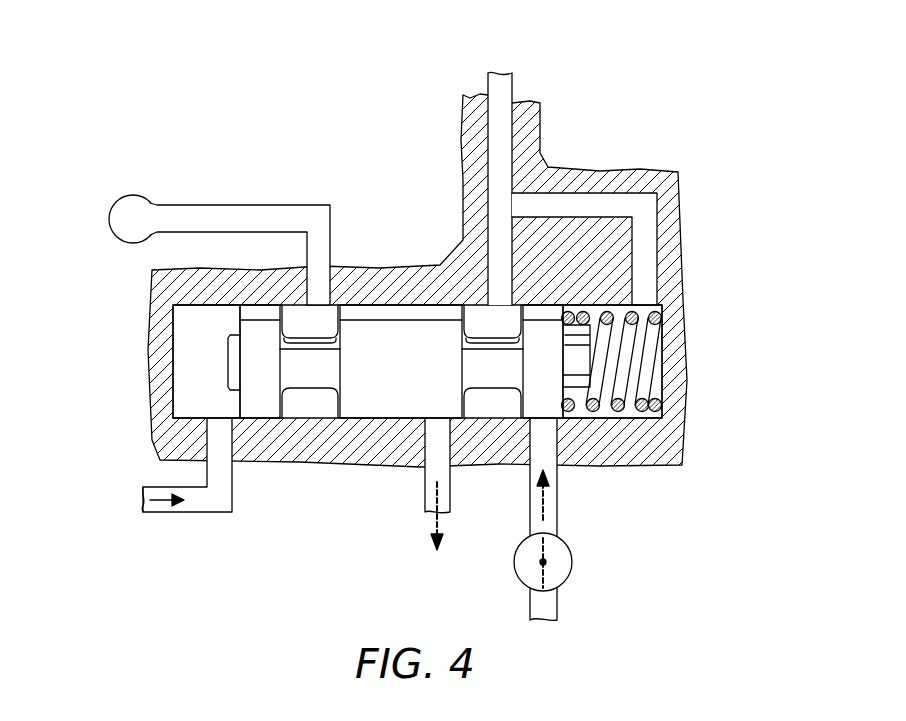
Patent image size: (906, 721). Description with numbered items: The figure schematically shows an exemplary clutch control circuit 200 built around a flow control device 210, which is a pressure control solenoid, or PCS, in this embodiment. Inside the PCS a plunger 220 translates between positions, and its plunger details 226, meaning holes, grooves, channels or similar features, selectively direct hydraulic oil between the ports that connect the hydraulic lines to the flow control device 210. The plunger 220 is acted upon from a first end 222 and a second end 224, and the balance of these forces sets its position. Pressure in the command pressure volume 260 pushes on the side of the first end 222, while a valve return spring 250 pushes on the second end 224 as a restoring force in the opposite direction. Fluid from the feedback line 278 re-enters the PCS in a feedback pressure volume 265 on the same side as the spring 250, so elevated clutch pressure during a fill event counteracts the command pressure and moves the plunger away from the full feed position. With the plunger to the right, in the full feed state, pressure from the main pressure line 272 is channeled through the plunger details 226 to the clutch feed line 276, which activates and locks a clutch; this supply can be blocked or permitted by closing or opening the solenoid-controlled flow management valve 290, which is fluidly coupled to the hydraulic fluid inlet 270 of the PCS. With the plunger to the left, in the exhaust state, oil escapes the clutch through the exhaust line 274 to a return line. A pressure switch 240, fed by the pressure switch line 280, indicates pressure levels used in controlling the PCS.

The valve assembly 200 is at (141, 96).
The flow control device 210 is at (407, 304).
The plunger 220 is at (377, 332).
The first end of the plunger 222 is at (232, 357).
The second end of the plunger 224 is at (580, 398).
The plunger details 226 is at (300, 335).
The pressure switch 240 is at (131, 195).
The valve return spring 250 is at (637, 357).
The command pressure volume 260 is at (183, 373).
The feedback pressure volume 265 is at (628, 385).
The hydraulic fluid inlet 270 is at (200, 498).
The main pressure line 272 is at (556, 478).
The exhaust line 274 is at (433, 472).
The clutch feed line 276 is at (498, 147).
The feedback line 278 is at (643, 267).
The pressure switch line 280 is at (220, 218).
The flow management valve 290 is at (562, 560).